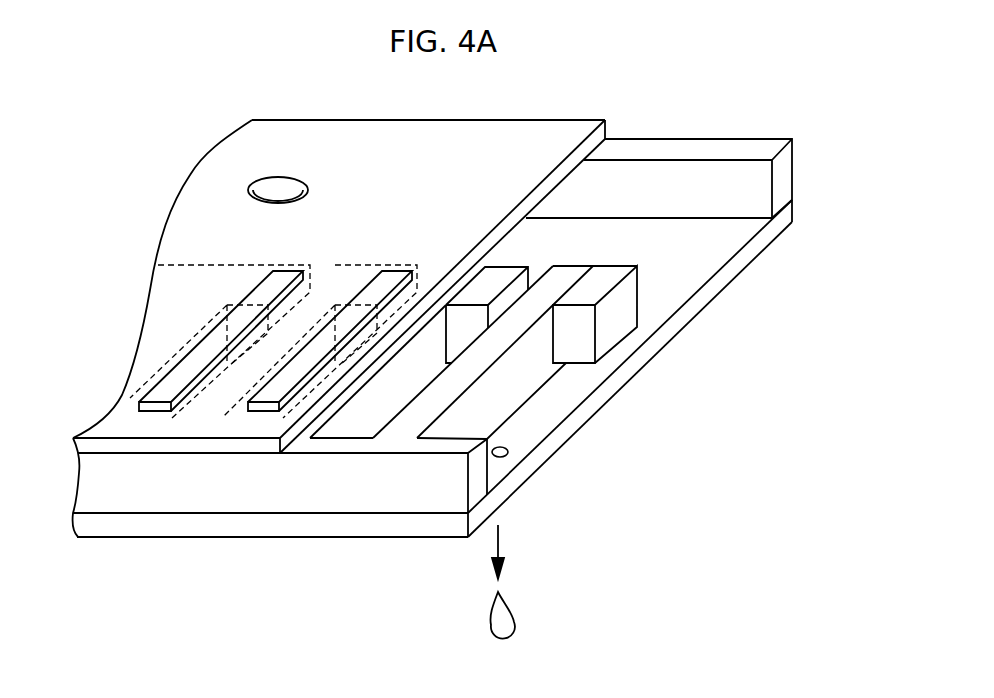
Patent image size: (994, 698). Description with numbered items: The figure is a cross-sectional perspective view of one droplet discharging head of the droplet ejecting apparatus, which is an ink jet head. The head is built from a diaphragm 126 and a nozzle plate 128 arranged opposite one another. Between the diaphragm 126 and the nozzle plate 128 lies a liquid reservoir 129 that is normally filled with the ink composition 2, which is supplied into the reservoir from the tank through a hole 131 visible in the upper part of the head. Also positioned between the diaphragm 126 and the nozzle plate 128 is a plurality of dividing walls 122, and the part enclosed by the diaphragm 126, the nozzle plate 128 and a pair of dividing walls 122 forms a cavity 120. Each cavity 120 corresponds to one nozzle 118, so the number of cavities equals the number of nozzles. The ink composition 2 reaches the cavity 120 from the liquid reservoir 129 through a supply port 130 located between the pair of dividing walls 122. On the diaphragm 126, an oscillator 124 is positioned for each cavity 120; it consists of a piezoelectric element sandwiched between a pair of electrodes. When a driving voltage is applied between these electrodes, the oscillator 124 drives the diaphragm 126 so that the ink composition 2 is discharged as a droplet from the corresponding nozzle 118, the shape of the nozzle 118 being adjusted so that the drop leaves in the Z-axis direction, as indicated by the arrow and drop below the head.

The ink composition 2 is at (502, 625).
The nozzle 118 is at (508, 451).
The cavity 120 is at (438, 340).
The dividing wall 122 is at (503, 392).
The oscillator 124 is at (183, 376).
The diaphragm 126 is at (297, 430).
The nozzle plate 128 is at (677, 318).
The liquid reservoir 129 is at (703, 255).
The supply port 130 is at (512, 292).
The hole 131 is at (278, 200).